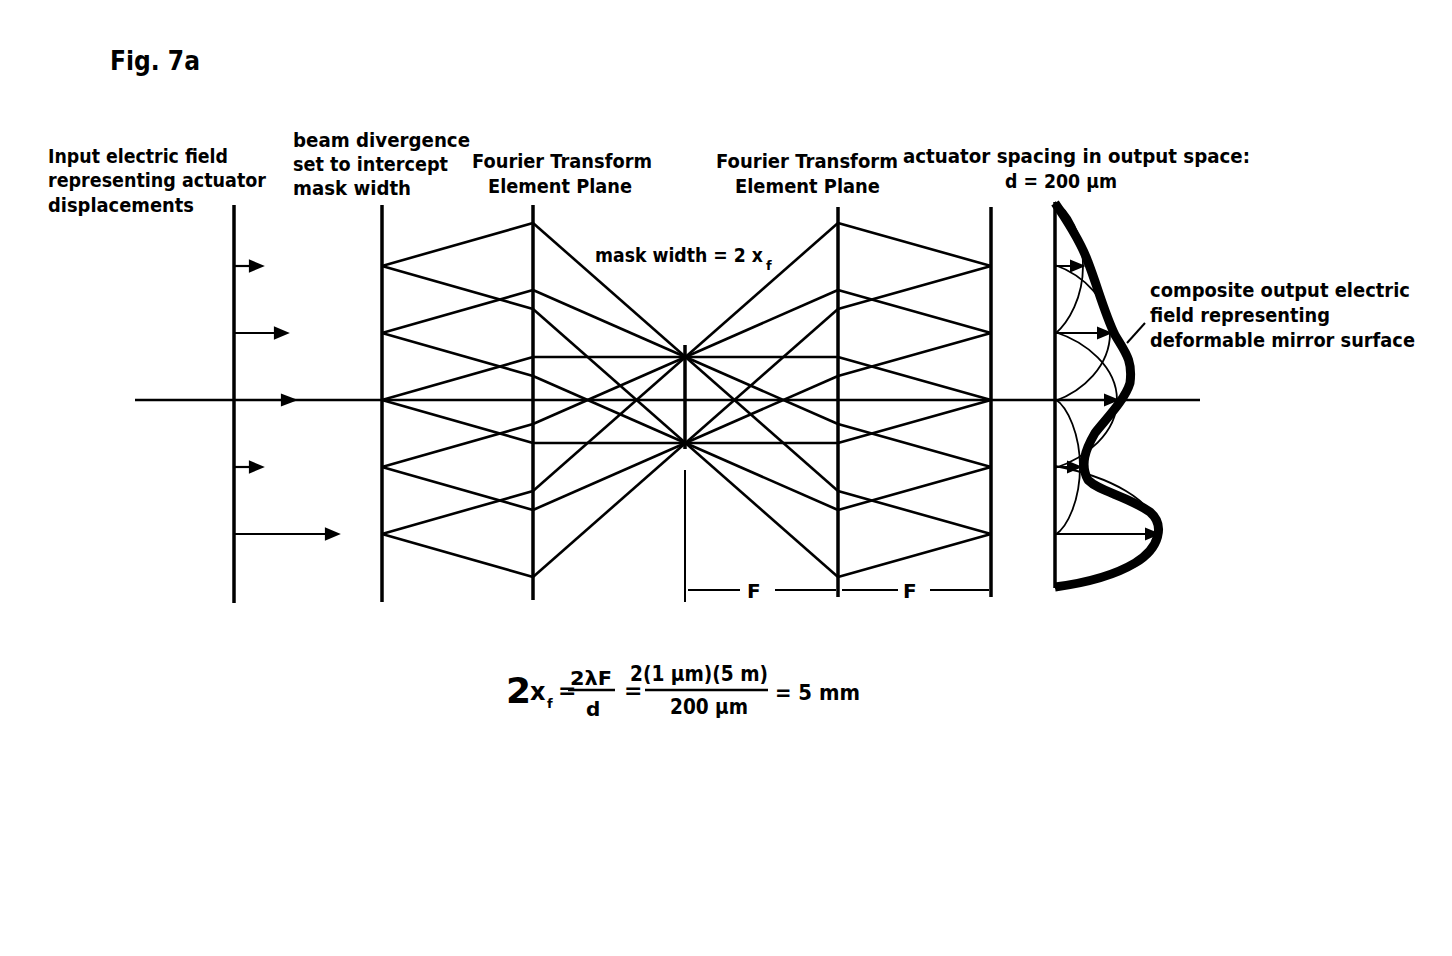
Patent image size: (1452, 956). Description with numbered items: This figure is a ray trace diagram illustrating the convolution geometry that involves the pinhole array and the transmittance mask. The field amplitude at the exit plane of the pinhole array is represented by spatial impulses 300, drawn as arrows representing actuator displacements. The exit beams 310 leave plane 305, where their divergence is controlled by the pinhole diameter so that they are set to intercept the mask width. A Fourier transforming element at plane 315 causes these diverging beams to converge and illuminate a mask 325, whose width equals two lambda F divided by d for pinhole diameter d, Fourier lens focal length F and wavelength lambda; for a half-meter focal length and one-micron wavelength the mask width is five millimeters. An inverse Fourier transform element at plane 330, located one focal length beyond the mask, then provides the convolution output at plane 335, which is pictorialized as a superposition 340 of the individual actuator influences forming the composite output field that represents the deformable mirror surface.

The spatial impulses 300 is at (265, 541).
The plane 305 is at (382, 602).
The exit beams 310 is at (445, 552).
The Fourier transforming element plane 315 is at (533, 600).
The mask 325 is at (685, 346).
The inverse Fourier transform element plane 330 is at (838, 597).
The output plane 335 is at (991, 597).
The superposition 340 is at (1118, 567).